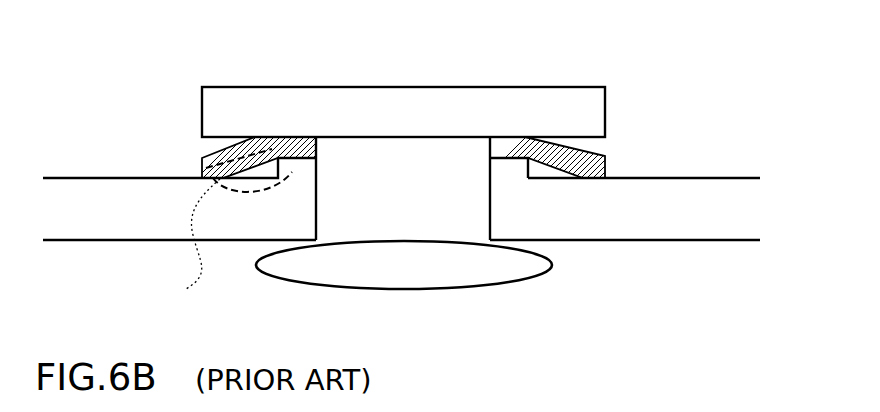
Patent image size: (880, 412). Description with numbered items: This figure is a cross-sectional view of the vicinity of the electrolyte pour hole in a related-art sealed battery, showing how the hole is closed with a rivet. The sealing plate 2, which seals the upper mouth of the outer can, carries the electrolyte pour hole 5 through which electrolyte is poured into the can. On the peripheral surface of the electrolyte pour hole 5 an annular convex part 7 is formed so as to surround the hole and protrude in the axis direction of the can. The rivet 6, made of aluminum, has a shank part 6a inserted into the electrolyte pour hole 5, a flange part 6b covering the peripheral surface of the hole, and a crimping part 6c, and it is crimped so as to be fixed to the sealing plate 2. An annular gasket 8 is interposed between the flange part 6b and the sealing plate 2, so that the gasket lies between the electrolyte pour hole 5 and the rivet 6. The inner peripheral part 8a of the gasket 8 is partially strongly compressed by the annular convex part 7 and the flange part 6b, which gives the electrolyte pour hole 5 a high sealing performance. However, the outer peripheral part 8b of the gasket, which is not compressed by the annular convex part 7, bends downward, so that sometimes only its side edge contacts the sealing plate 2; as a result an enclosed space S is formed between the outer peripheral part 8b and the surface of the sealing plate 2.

The sealing plate 2 is at (127, 223).
The electrolyte pour hole 5 is at (484, 228).
The rivet 6 is at (403, 186).
The shank part 6a is at (403, 241).
The flange part 6b is at (523, 122).
The crimping part 6c is at (495, 268).
The annular convex part 7 is at (297, 173).
The annular gasket 8 is at (399, 112).
The inner peripheral part 8a is at (298, 137).
The outer peripheral part 8b is at (203, 163).
The enclosed space S is at (196, 247).